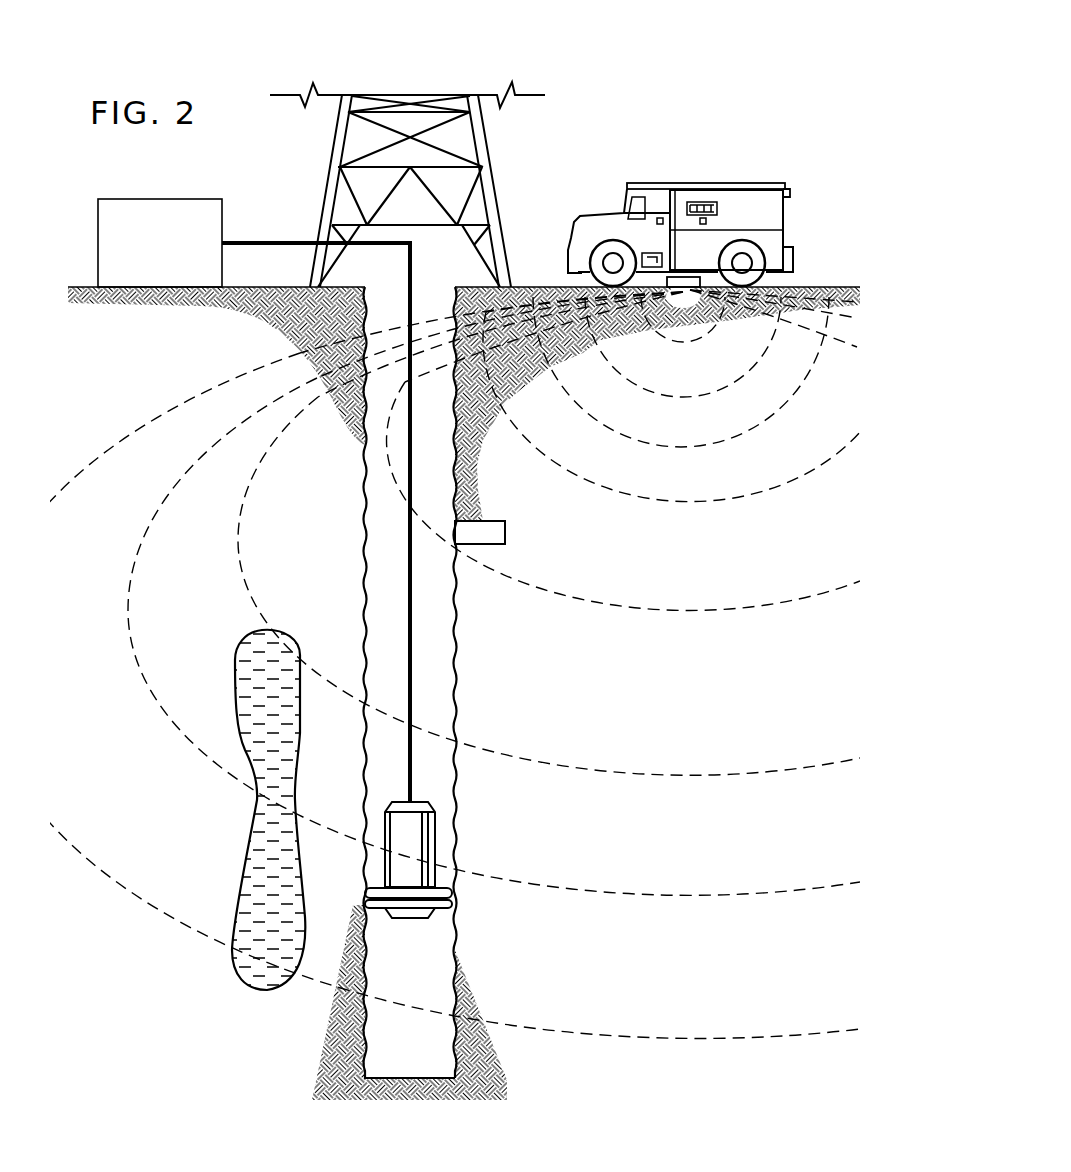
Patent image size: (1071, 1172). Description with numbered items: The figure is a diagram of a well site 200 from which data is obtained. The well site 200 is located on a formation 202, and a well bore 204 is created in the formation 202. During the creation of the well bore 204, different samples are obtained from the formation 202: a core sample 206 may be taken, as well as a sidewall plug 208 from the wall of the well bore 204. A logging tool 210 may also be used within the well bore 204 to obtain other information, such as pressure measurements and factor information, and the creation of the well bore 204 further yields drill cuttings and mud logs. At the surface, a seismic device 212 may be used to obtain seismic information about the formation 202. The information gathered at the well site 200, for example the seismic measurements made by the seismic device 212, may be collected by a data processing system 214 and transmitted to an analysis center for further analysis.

The well site 200 is at (636, 83).
The formation 202 is at (139, 385).
The well bore 204 is at (452, 613).
The core sample 206 is at (232, 955).
The sidewall plug 208 is at (505, 533).
The logging tool 210 is at (442, 845).
The seismic device 212 is at (720, 181).
The data processing system 214 is at (132, 199).